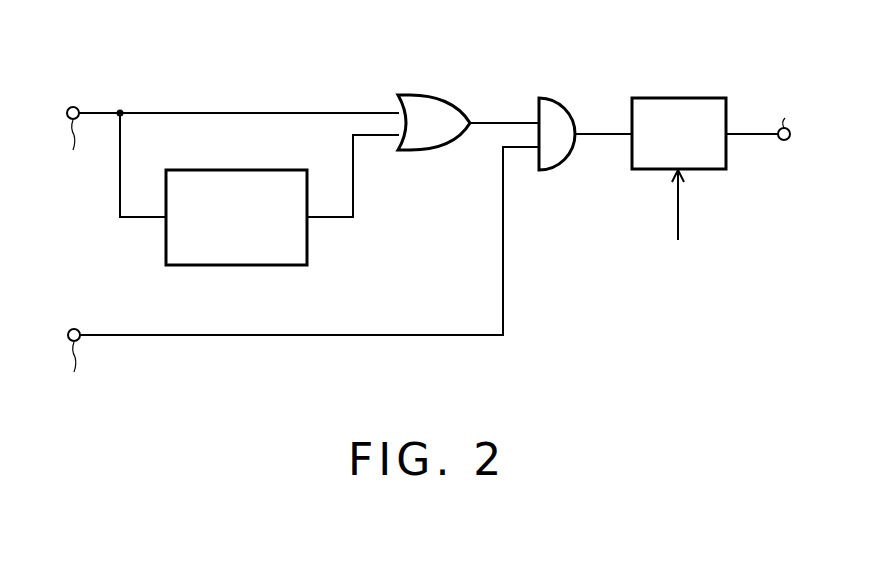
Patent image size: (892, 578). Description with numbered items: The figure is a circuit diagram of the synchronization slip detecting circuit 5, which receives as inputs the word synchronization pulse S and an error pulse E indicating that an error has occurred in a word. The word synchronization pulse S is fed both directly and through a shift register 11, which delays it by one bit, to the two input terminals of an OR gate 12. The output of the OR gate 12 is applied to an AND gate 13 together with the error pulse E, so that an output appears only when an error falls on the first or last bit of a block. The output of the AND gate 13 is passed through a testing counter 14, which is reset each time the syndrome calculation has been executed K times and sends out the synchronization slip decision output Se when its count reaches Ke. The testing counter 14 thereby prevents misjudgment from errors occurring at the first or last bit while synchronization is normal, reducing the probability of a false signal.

The synchronization slip detecting circuit 5 is at (536, 387).
The shift register 11 is at (225, 170).
The OR gate 12 is at (450, 97).
The AND gate 13 is at (548, 97).
The testing counter 14 is at (670, 98).